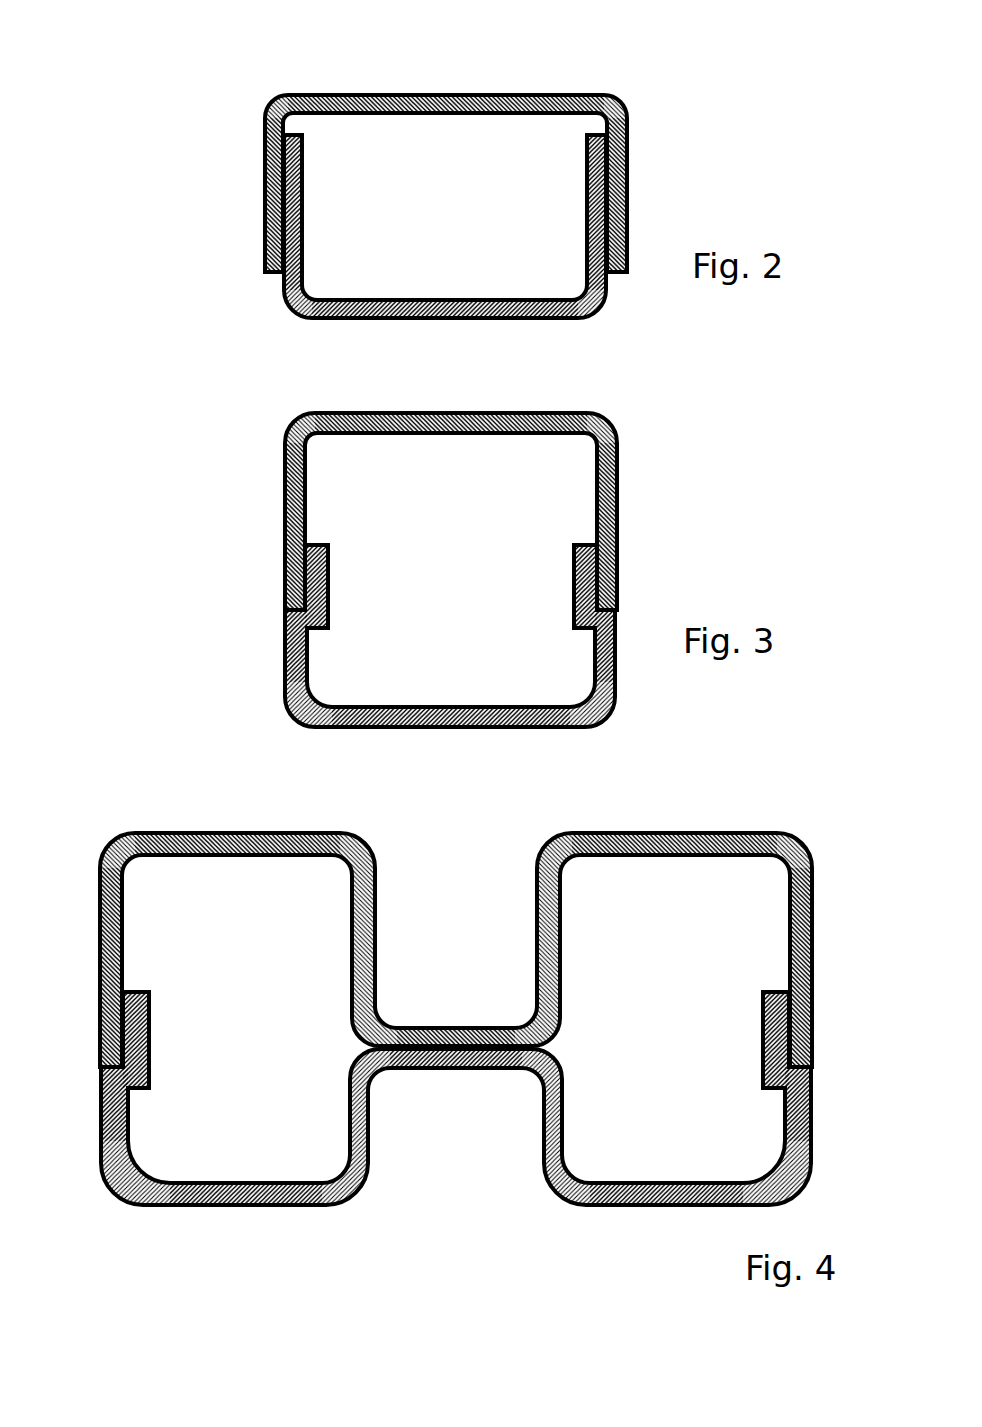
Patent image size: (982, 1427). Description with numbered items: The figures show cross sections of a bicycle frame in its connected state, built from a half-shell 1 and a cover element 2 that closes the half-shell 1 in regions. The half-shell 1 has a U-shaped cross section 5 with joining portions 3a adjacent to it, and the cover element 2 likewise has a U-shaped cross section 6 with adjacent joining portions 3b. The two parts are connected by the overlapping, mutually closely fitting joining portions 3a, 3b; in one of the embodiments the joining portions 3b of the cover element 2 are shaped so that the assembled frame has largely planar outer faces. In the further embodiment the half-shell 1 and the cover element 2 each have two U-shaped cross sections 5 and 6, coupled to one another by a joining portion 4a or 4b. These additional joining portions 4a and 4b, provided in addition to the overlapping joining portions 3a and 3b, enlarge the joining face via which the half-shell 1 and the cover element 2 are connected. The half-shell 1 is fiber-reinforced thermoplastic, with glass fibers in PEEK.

In FIG. 2, the half-shell 1 is at (243, 88).
In FIG. 3, the half-shell 1 is at (255, 446).
In FIG. 4, the half-shell 1 is at (163, 787).
In FIG. 2, the cover element 2 is at (587, 352).
In FIG. 3, the cover element 2 is at (455, 758).
In FIG. 4, the cover element 2 is at (302, 1219).
In FIG. 2, the joining portions of the half-shell 3a is at (272, 196).
In FIG. 3, the joining portions of the half-shell 3a is at (295, 572).
In FIG. 4, the joining portions of the half-shell 3a is at (111, 1024).
In FIG. 2, the joining portions of the cover element 3b is at (283, 268).
In FIG. 3, the joining portions of the cover element 3b is at (292, 638).
In FIG. 4, the joining portions of the cover element 3b is at (115, 1082).
In FIG. 4, the joining portion of the half-shell 4a is at (460, 1027).
In FIG. 4, the joining portion of the cover element 4b is at (438, 1073).
In FIG. 2, the U-shaped cross section of the half-shell 5 is at (435, 96).
In FIG. 3, the U-shaped cross section of the half-shell 5 is at (437, 410).
In FIG. 4, the U-shaped cross section of the half-shell 5 is at (235, 830).
In FIG. 2, the U-shaped cross section of the cover element 6 is at (368, 321).
In FIG. 3, the U-shaped cross section of the cover element 6 is at (397, 729).
In FIG. 4, the U-shaped cross section of the cover element 6 is at (212, 1207).